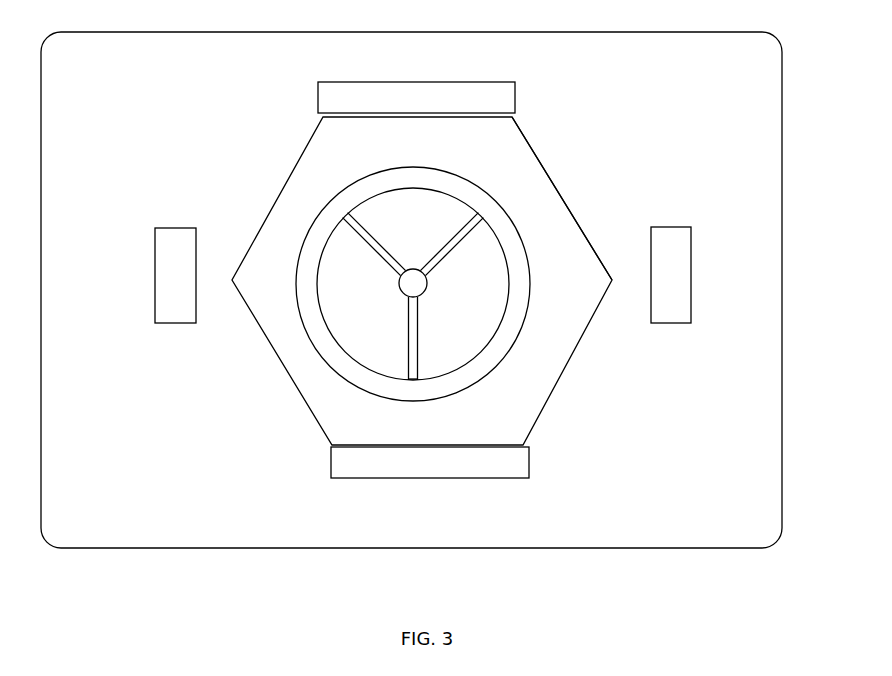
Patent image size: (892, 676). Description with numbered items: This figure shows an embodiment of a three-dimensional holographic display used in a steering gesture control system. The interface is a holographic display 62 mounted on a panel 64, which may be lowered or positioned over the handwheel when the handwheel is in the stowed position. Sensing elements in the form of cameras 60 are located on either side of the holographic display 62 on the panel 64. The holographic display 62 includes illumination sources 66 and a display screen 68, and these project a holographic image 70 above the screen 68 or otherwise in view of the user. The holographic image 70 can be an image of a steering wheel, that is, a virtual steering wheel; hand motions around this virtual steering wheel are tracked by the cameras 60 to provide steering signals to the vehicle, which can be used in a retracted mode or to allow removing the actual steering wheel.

The cameras 60 is at (173, 315).
The holographic display 62 is at (590, 444).
The panel 64 is at (771, 373).
The illumination sources 66 is at (423, 90).
The display screen 68 is at (548, 188).
The holographic image 70 is at (320, 333).